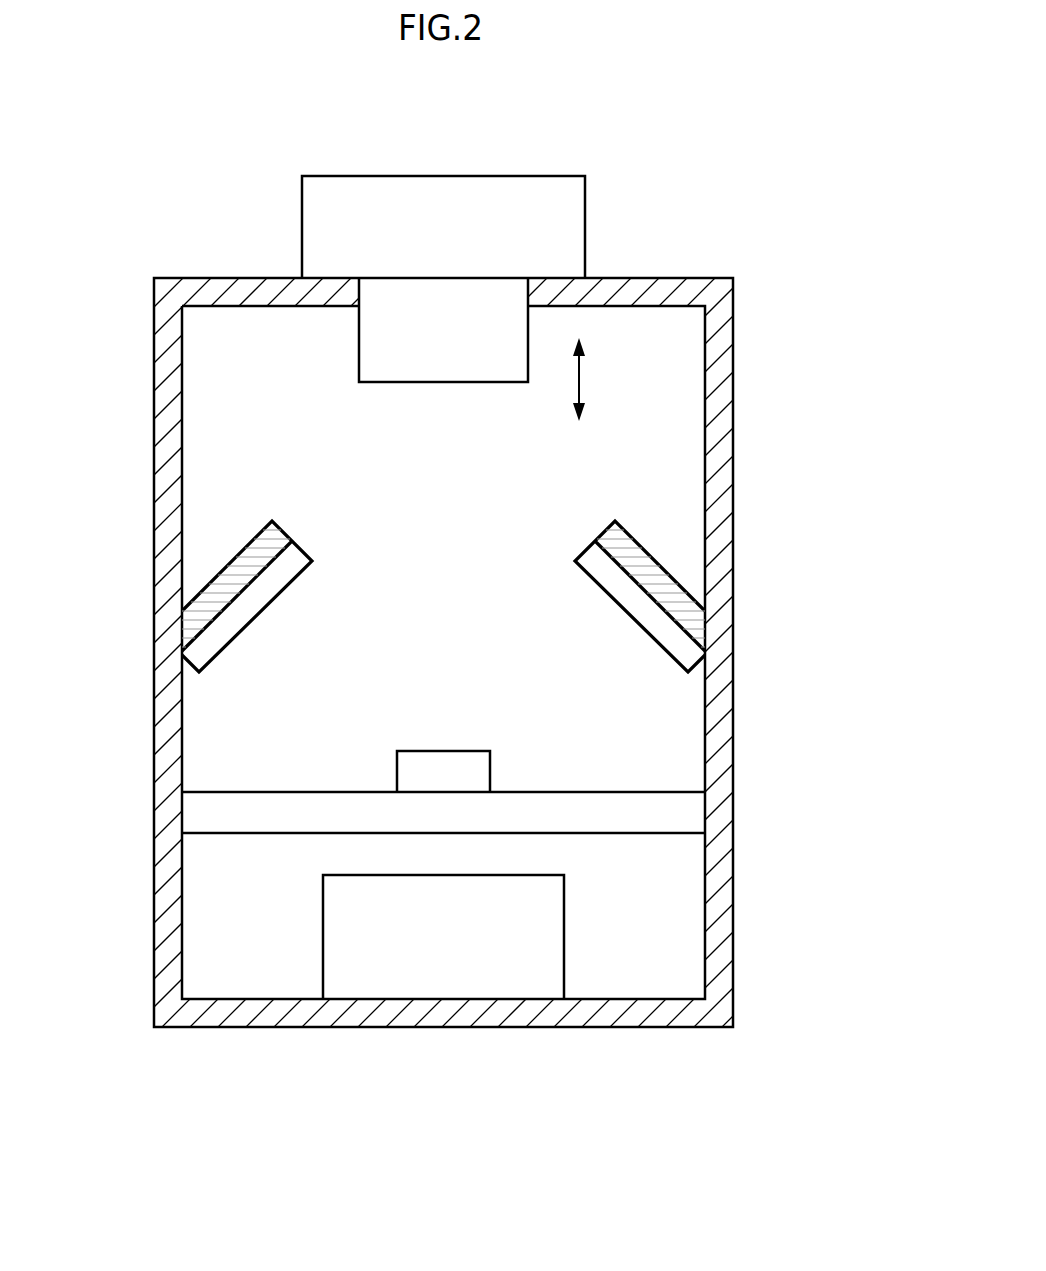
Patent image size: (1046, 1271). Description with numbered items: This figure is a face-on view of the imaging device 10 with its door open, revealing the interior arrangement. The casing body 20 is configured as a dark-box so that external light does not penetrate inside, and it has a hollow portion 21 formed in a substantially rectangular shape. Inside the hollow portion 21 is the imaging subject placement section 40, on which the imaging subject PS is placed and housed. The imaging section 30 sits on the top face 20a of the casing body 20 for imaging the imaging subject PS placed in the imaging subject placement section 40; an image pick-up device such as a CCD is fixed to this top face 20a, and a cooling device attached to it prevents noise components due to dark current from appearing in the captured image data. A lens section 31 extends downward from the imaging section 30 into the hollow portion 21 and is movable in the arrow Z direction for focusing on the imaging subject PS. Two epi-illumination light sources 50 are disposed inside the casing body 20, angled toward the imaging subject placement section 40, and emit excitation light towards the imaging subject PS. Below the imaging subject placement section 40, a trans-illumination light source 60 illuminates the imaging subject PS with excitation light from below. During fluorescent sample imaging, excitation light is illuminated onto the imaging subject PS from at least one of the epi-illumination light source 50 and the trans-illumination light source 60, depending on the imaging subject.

The imaging device 10 is at (713, 108).
The casing body 20 is at (722, 465).
The top face 20a is at (710, 288).
The hollow portion 21 is at (688, 385).
The imaging section 30 is at (527, 193).
The lens section 31 is at (377, 345).
The arrow Z direction Z is at (580, 373).
The epi-illumination light source 50 is at (240, 603).
The imaging subject PS is at (444, 768).
The imaging subject placement section 40 is at (690, 812).
The trans-illumination light source 60 is at (517, 980).